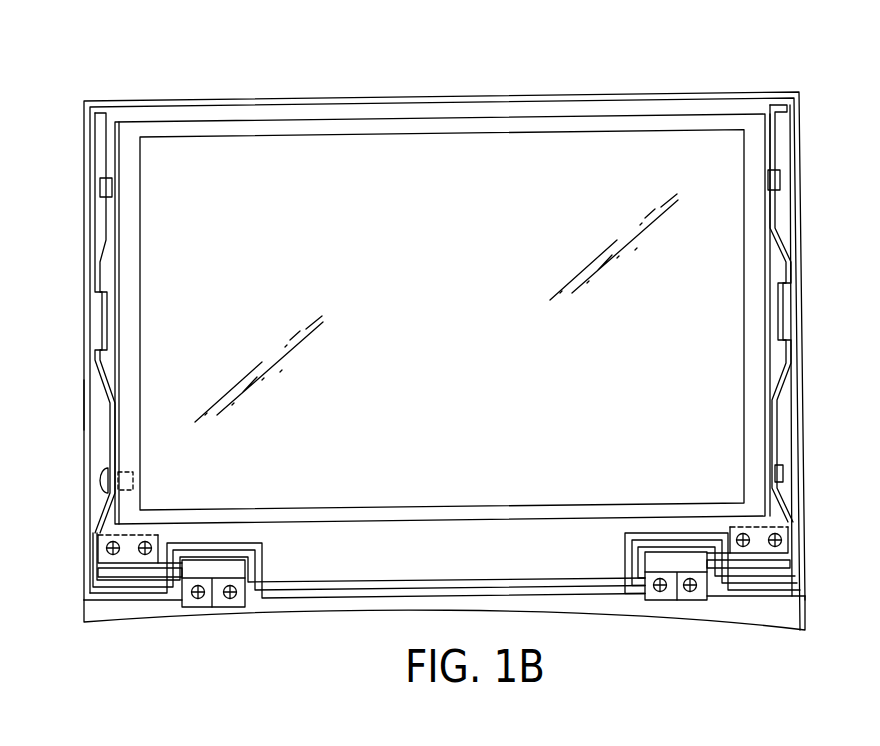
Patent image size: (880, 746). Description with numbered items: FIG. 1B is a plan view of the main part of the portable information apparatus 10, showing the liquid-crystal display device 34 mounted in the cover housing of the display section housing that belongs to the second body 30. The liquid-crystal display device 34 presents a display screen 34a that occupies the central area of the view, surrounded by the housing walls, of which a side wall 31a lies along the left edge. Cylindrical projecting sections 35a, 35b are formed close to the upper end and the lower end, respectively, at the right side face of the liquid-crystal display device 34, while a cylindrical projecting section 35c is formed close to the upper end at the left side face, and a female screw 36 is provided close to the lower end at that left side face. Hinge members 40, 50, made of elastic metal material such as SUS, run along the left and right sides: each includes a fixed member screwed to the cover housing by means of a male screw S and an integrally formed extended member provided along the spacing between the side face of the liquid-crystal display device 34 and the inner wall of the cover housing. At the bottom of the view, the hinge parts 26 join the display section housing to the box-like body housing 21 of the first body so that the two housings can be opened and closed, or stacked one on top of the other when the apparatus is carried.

The portable information apparatus 10 is at (587, 91).
The body housing 21 is at (103, 610).
The hinge parts 26 is at (213, 573).
The second body 30 is at (407, 97).
The side wall of display housing 31a is at (84, 404).
The liquid-crystal display device 34 is at (738, 112).
The display screen 34a is at (681, 140).
The cylindrical projecting section 35a is at (783, 475).
The cylindrical projecting section 35b is at (782, 180).
The cylindrical projecting section 35c is at (102, 188).
The female screw 36 is at (134, 474).
The hinge member 40 is at (112, 448).
The hinge member 50 is at (775, 427).
The male screw S is at (100, 487).